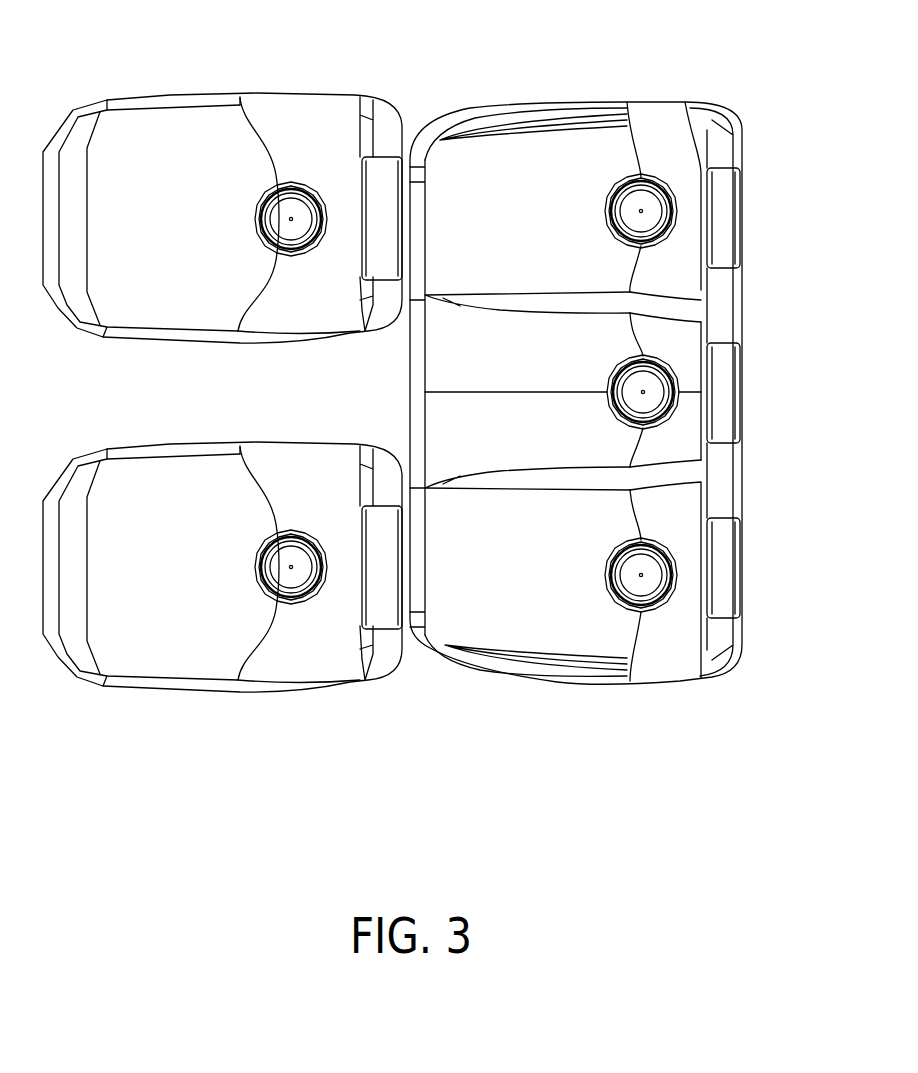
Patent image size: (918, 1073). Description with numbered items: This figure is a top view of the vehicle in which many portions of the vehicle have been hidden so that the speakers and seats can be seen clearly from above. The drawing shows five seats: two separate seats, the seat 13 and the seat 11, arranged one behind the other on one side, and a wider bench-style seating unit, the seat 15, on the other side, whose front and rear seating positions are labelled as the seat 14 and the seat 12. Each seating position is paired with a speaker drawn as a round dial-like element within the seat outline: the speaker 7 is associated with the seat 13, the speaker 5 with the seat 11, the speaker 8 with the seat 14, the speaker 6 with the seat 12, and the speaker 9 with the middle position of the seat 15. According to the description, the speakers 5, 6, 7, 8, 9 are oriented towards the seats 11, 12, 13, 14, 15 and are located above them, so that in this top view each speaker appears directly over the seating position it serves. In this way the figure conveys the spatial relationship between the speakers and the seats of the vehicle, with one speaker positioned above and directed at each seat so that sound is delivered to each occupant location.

The speaker 5 is at (297, 531).
The speaker 6 is at (648, 548).
The speaker 7 is at (297, 182).
The speaker 8 is at (648, 178).
The speaker 9 is at (621, 375).
The seat 11 is at (222, 602).
The seat 12 is at (567, 706).
The seat 13 is at (222, 177).
The seat 14 is at (657, 80).
The seat 15 is at (621, 391).